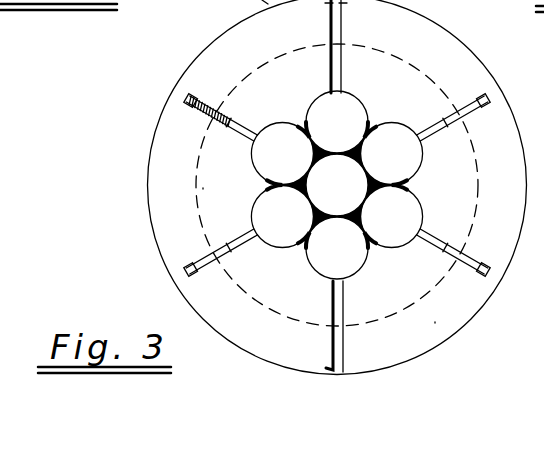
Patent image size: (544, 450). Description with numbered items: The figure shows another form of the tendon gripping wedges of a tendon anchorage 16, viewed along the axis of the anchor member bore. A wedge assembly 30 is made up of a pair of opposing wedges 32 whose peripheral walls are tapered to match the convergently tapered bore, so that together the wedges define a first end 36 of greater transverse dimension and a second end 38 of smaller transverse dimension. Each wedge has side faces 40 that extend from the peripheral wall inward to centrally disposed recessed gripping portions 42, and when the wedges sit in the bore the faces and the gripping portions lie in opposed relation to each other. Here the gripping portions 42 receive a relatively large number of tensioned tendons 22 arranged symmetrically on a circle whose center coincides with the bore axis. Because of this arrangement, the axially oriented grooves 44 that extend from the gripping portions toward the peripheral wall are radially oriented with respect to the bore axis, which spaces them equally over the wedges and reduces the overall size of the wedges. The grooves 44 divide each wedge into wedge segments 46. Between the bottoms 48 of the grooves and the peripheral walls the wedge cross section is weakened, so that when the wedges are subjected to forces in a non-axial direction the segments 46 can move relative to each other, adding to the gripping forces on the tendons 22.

The tendon anchorage 16 is at (205, 6).
The tendons 22 is at (408, 213).
The wedge assembly 30 is at (287, 201).
The wedges 32 is at (278, 357).
The first end 36 is at (464, 43).
The second end 38 is at (440, 88).
The side faces 40 is at (336, 338).
The gripping portions 42 is at (278, 243).
The grooves 44 is at (207, 268).
The wedge segments 46 is at (203, 188).
The groove bottoms 48 is at (186, 101).